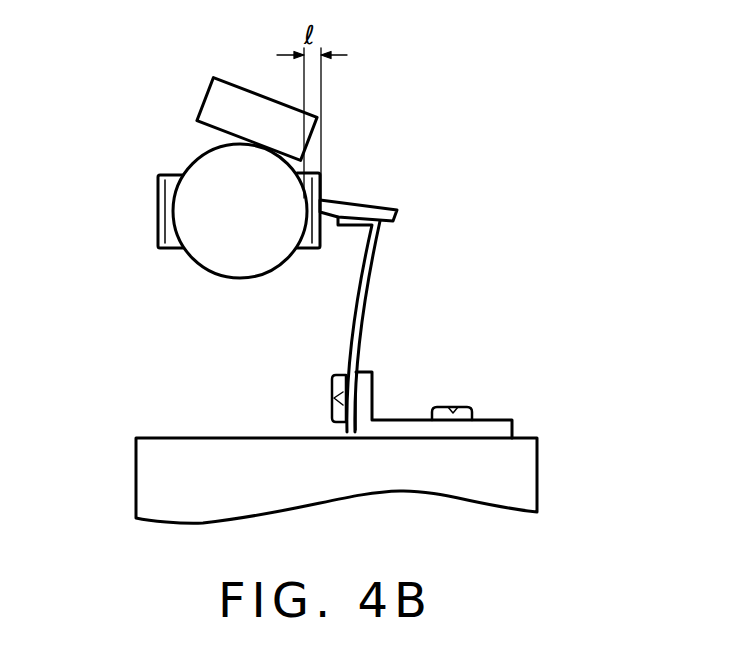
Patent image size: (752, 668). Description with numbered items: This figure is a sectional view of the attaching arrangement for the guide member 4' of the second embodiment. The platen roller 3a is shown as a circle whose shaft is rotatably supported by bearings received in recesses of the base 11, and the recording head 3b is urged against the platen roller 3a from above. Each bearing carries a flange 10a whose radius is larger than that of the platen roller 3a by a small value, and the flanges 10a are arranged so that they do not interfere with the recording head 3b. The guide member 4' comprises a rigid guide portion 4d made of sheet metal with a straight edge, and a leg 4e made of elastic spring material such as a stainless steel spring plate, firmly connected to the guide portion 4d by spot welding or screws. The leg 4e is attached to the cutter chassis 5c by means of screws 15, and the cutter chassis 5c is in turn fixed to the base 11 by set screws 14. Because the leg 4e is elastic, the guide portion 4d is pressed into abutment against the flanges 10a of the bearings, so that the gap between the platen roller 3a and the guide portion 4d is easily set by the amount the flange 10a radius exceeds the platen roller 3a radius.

The recording head 3b is at (213, 104).
The platen roller 3a is at (220, 262).
The flange 10a is at (158, 216).
The guide member 4' is at (405, 288).
The guide portion 4d is at (362, 206).
The leg 4e is at (363, 302).
The cutter chassis 5c is at (363, 388).
The screws 15 is at (332, 384).
The set screws 14 is at (465, 405).
The base 11 is at (523, 482).